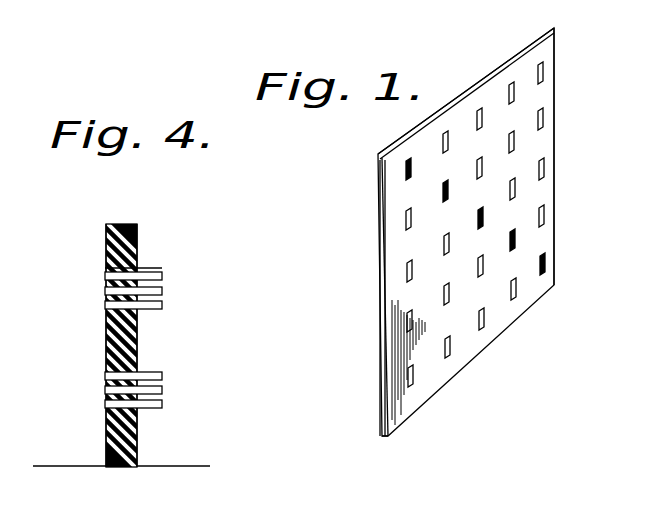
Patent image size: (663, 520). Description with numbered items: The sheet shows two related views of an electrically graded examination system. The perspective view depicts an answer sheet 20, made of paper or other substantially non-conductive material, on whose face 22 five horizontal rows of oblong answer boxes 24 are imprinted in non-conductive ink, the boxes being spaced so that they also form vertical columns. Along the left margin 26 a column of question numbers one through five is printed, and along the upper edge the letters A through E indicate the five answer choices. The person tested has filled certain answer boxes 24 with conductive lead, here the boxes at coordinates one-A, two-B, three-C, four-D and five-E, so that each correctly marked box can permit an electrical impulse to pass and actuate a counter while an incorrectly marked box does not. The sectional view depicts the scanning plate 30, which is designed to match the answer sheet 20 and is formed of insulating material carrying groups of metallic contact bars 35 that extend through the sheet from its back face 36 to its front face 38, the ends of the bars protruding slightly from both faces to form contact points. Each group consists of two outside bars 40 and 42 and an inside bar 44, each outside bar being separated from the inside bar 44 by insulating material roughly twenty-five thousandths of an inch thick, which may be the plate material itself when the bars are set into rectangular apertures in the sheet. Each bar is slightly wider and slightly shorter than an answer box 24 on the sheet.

In FIG. 1, the answer sheet 20 is at (555, 144).
In FIG. 1, the face 22 is at (546, 190).
In FIG. 1, the answer boxes 24 is at (479, 111).
In FIG. 1, the left margin 26 is at (534, 41).
In FIG. 4, the scanning plate 30 is at (106, 254).
In FIG. 4, the bars 35 is at (151, 268).
In FIG. 4, the back face 36 is at (106, 340).
In FIG. 4, the front face 38 is at (144, 343).
In FIG. 4, the outside bar 40 is at (162, 276).
In FIG. 4, the outside bar 42 is at (163, 305).
In FIG. 4, the inside bar 44 is at (163, 291).